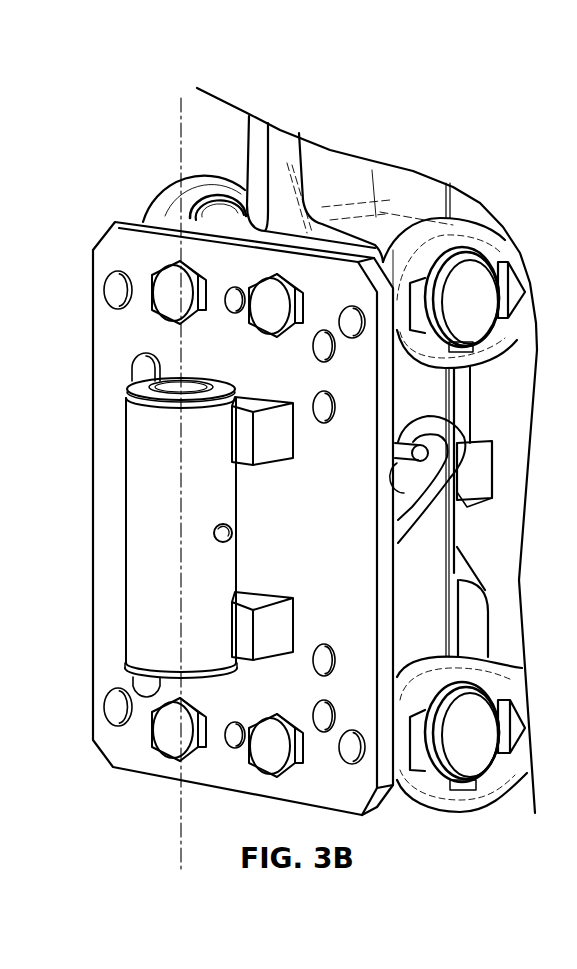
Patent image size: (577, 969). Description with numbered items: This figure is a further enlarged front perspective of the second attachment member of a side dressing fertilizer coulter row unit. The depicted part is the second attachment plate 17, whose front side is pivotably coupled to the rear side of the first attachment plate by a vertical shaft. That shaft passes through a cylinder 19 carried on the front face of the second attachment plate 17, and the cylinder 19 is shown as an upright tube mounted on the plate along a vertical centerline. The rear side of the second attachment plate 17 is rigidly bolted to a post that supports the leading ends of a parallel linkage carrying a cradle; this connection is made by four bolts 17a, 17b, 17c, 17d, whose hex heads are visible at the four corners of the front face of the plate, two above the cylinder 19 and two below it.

The second attachment plate 17 is at (93, 470).
The bolt 17a is at (167, 307).
The bolt 17b is at (262, 311).
The bolt 17c is at (165, 732).
The bolt 17d is at (267, 750).
The cylinder 19 is at (125, 635).